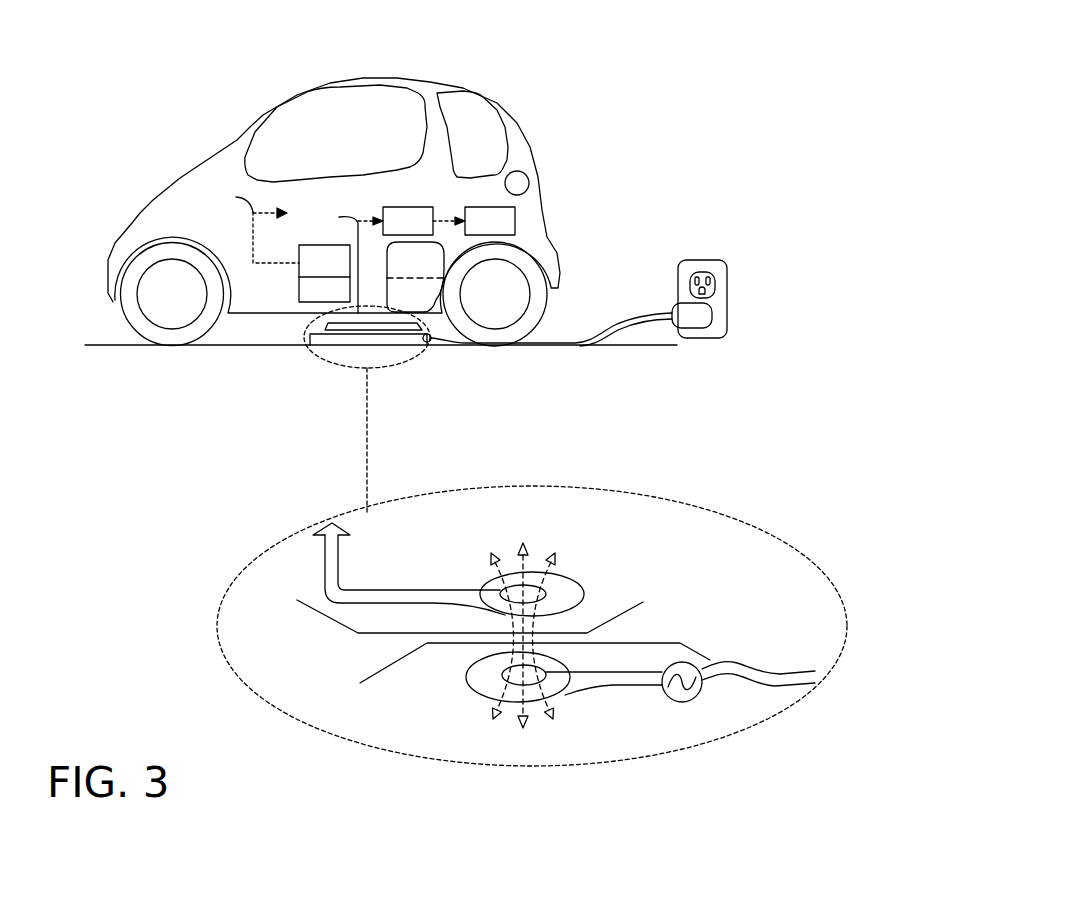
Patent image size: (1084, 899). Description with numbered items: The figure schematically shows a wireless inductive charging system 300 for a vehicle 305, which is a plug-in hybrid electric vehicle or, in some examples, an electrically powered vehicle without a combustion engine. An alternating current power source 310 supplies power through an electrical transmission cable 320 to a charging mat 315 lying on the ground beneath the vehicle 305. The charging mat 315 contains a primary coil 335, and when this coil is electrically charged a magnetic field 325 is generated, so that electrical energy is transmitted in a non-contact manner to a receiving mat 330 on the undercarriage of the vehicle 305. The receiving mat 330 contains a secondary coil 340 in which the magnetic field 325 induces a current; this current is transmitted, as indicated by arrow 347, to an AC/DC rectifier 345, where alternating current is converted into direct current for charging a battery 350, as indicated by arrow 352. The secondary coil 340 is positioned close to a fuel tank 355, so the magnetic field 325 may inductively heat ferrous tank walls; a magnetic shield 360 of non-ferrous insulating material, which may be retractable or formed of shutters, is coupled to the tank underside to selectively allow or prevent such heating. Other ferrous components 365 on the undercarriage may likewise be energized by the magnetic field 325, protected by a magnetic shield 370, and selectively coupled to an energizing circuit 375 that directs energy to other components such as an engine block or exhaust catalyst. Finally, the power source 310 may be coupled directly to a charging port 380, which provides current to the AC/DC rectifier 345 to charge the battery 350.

The inductive charging system 300 is at (640, 58).
The vehicle 305 is at (110, 214).
The alternating current power source 310 is at (707, 259).
The charging mat 315 is at (393, 338).
The electrical transmission cable 320 is at (600, 330).
The magnetic field 325 is at (563, 540).
The receiving mat 330 is at (341, 319).
The primary coil 335 is at (613, 672).
The secondary coil 340 is at (415, 590).
The AC/DC rectifier 345 is at (423, 231).
The arrow 347 is at (305, 562).
The battery 350 is at (505, 231).
The arrow 352 is at (441, 214).
The fuel tank 355 is at (429, 268).
The magnetic shield 360 is at (422, 304).
The ferrous components 365 is at (340, 271).
The magnetic shield 370 is at (340, 301).
The energizing circuit 375 is at (252, 225).
The charging port 380 is at (529, 183).